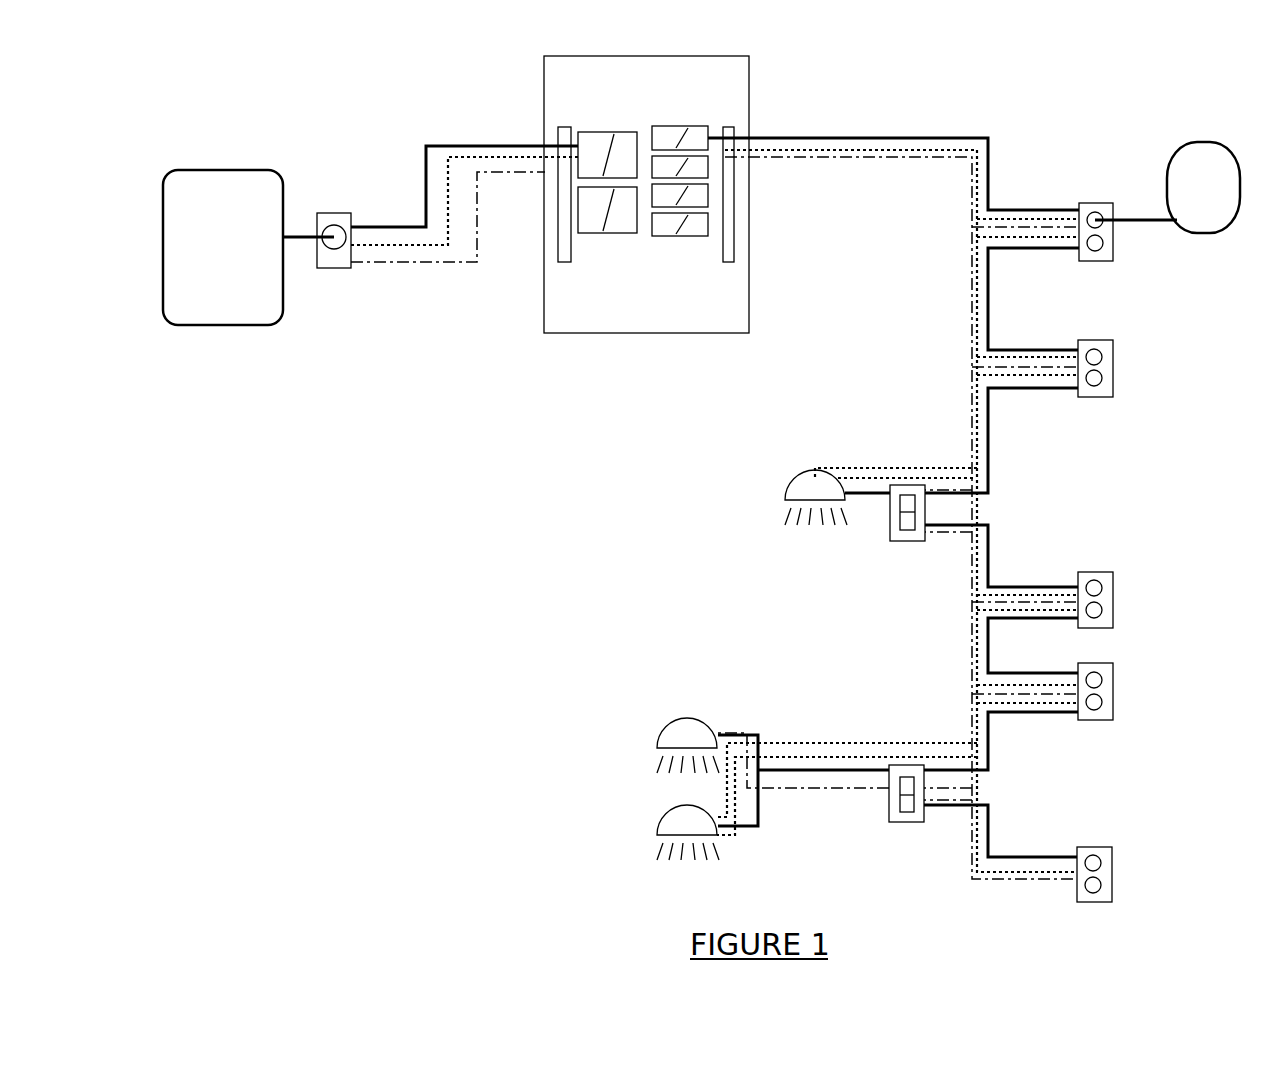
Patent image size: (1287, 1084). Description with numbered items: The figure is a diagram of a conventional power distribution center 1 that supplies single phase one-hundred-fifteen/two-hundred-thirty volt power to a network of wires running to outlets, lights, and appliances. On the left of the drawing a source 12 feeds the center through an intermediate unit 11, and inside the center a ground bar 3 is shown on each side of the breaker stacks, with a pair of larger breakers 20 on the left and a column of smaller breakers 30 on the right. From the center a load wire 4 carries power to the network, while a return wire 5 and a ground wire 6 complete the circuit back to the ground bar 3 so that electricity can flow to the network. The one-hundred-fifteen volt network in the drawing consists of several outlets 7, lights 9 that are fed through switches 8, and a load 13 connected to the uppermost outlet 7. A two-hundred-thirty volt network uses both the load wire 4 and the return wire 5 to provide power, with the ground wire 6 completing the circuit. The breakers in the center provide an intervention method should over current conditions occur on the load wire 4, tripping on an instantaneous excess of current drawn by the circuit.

The power distribution center 1 is at (749, 70).
The ground bar 3 is at (558, 252).
The load wire 4 is at (440, 145).
The return wire 5 is at (500, 157).
The ground wire 6 is at (497, 175).
The outlets 7 is at (1096, 203).
The switches 8 is at (890, 530).
The lights 9 is at (792, 490).
The meter 11 is at (331, 213).
The utility power source 12 is at (262, 170).
The loads 13 is at (1192, 228).
The main circuit breaker 20 is at (578, 160).
The branch circuit breaker 30 is at (708, 140).